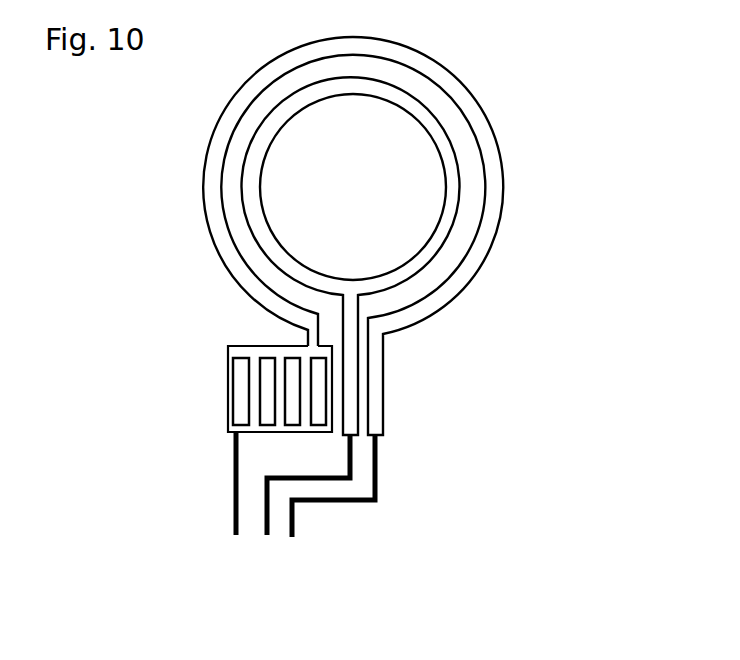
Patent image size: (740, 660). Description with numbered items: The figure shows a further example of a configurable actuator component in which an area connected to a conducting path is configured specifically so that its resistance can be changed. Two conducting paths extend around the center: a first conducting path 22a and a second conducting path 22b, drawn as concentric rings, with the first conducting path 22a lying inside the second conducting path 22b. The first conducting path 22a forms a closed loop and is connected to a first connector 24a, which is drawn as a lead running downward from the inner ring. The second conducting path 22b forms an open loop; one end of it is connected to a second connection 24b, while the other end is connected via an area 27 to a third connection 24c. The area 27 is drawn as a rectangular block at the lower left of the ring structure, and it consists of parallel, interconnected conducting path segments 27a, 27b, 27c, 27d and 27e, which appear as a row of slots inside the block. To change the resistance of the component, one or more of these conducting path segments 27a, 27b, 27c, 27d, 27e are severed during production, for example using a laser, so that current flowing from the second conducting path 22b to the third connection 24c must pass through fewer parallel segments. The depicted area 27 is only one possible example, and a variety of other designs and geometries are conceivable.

The first conducting path 22a is at (455, 187).
The second conducting path 22b is at (455, 88).
The area 27 is at (209, 363).
The conducting path segment 27a is at (322, 363).
The conducting path segment 27b is at (300, 385).
The conducting path segment 27c is at (277, 395).
The conducting path segment 27d is at (253, 408).
The conducting path segment 27e is at (228, 422).
The first connector 24a is at (267, 537).
The second connection 24b is at (292, 537).
The third connection 24c is at (235, 537).